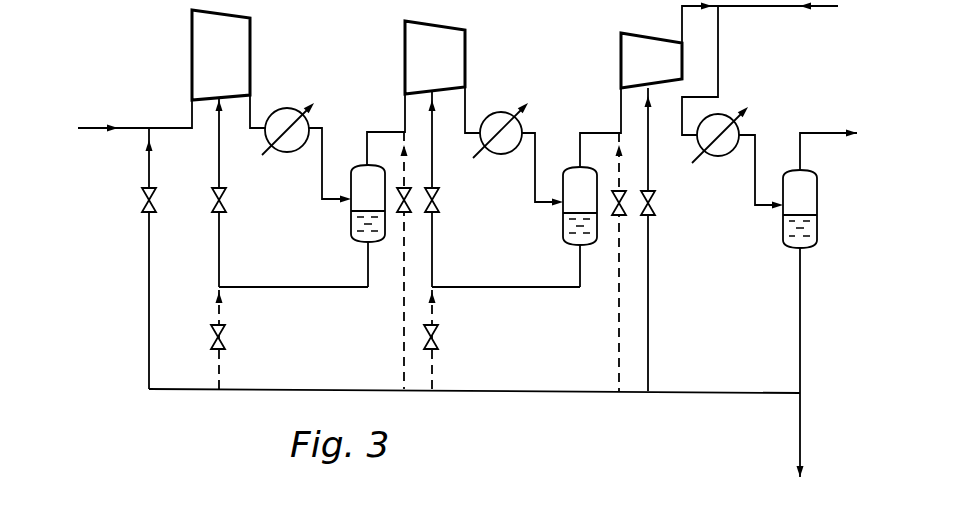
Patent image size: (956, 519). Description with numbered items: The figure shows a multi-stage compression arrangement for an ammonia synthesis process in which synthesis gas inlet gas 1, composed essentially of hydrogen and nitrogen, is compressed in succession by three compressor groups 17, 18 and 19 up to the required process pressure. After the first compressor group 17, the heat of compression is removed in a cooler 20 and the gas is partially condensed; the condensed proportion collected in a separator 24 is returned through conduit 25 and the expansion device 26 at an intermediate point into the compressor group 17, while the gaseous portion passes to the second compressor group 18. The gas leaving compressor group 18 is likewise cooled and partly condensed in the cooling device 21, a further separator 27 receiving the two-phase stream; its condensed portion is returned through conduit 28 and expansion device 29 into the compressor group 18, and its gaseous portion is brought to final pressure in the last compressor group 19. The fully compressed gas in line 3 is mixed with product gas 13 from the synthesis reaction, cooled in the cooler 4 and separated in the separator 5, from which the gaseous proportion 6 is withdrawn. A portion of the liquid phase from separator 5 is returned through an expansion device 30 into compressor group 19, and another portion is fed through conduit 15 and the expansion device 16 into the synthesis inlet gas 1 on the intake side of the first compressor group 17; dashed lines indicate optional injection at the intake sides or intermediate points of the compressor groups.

The synthesis gas inlet gas 1 is at (95, 128).
The compressed gas discharge line 3 is at (722, 75).
The cooler 4 is at (724, 156).
The separator 5 is at (818, 206).
The gaseous proportion 6 is at (823, 133).
The conduit for product gas 13 is at (783, 8).
The conduit 15 is at (344, 388).
The expansion device 16 is at (141, 200).
The first compressor group 17 is at (200, 59).
The second compressor group 18 is at (413, 63).
The last compressor group 19 is at (627, 65).
The cooler 20 is at (290, 116).
The cooling device 21 is at (497, 115).
The separator 24 is at (351, 222).
The conduit 25 is at (300, 289).
The expansion device 26 is at (226, 203).
The second separator 27 is at (563, 217).
The conduit 28 is at (523, 289).
The expansion device 29 is at (440, 203).
The expansion device 30 is at (656, 206).